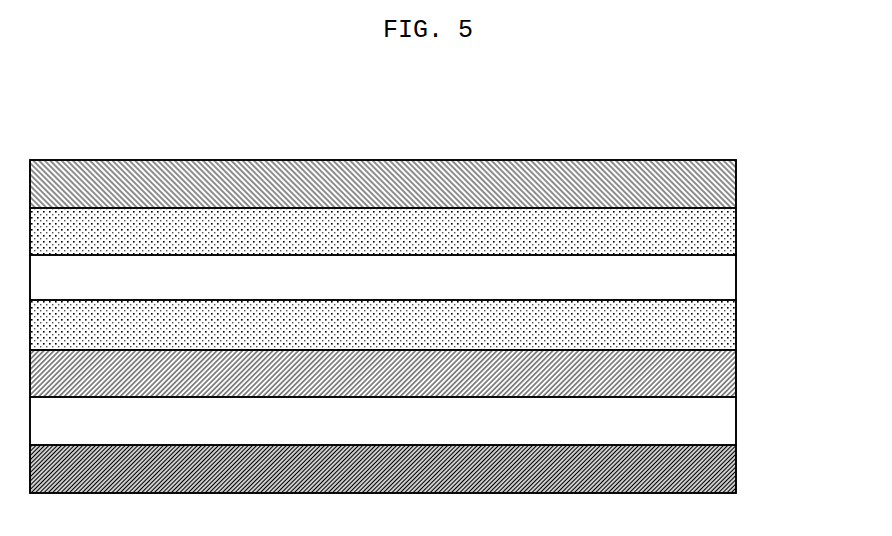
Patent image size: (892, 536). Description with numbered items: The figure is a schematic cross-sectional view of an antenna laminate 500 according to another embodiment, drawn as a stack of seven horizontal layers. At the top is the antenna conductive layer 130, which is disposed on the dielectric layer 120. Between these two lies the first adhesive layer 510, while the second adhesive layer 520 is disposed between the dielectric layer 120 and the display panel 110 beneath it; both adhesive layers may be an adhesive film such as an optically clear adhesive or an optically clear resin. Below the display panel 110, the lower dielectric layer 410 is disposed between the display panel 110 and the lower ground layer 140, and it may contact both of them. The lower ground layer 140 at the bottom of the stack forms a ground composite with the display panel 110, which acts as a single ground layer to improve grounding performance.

The antenna laminate 500 is at (418, 97).
The antenna conductive layer 130 is at (712, 183).
The first adhesive layer 510 is at (712, 230).
The dielectric layer 120 is at (712, 283).
The second adhesive layer 520 is at (712, 323).
The display panel 110 is at (712, 376).
The lower dielectric layer 410 is at (714, 421).
The lower ground layer 140 is at (714, 468).